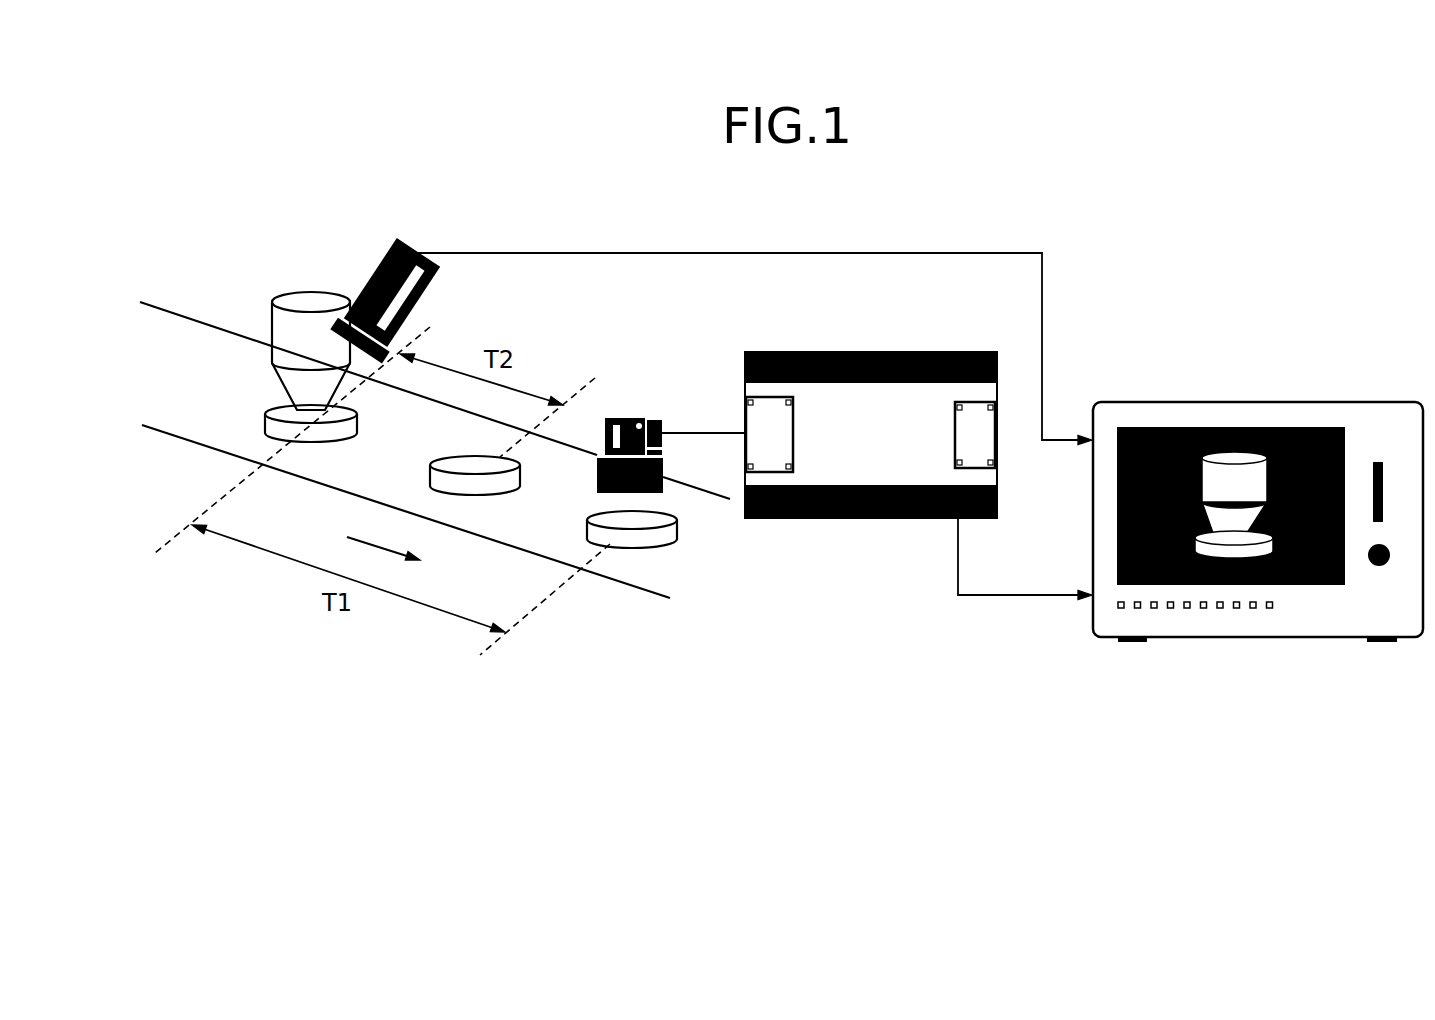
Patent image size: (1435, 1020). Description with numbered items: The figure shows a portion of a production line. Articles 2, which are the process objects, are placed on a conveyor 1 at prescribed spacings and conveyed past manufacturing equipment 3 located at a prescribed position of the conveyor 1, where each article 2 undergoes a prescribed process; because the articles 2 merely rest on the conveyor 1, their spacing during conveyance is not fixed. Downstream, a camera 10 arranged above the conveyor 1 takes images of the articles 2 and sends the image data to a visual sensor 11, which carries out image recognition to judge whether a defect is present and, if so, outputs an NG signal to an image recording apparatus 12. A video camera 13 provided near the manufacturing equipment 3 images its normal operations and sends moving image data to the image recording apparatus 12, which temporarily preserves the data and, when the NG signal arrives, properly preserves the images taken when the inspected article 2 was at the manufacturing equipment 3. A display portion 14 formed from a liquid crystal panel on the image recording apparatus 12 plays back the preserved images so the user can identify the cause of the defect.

The conveyor 1 is at (158, 414).
The article 2 is at (320, 433).
The manufacturing equipment 3 is at (307, 302).
The camera 10 is at (631, 418).
The visual sensor 11 is at (853, 520).
The image recording apparatus 12 is at (1258, 536).
The video camera 13 is at (362, 282).
The display portion 14 is at (1293, 587).